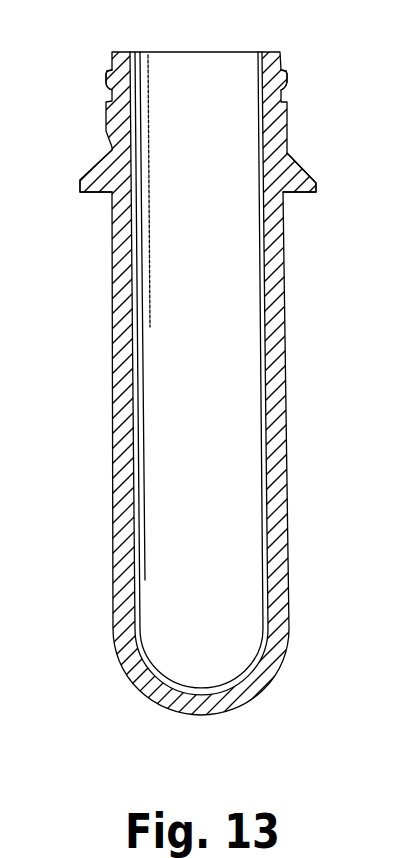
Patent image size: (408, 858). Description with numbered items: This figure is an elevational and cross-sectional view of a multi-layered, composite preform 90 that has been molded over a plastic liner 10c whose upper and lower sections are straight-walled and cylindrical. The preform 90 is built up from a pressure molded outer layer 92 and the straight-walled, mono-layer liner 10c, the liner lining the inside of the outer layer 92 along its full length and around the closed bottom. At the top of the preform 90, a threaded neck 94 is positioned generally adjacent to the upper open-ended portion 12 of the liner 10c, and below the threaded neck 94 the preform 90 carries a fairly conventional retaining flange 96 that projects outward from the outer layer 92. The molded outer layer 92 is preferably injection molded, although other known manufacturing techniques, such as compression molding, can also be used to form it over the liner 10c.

The composite preform 90 is at (204, 365).
The pressure molded outer layer 92 is at (279, 412).
The threaded neck 94 is at (108, 78).
The retaining flange 96 is at (319, 192).
The upper open-ended portion 12 is at (139, 81).
The liner 10c is at (272, 567).